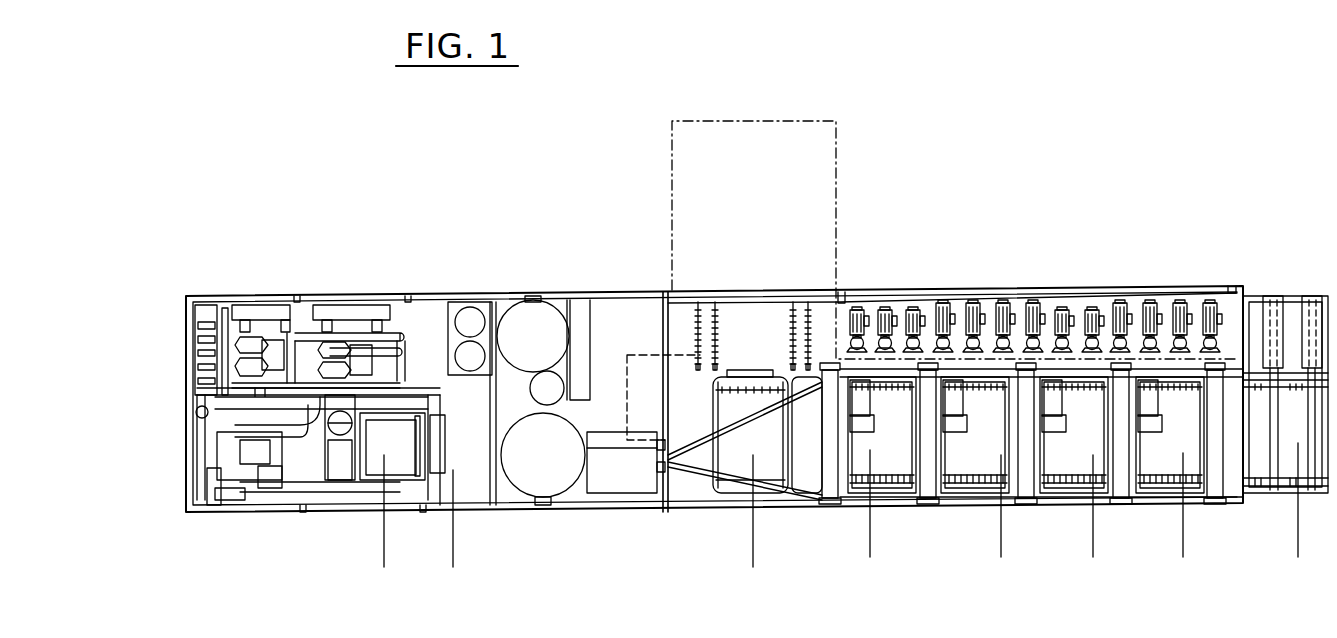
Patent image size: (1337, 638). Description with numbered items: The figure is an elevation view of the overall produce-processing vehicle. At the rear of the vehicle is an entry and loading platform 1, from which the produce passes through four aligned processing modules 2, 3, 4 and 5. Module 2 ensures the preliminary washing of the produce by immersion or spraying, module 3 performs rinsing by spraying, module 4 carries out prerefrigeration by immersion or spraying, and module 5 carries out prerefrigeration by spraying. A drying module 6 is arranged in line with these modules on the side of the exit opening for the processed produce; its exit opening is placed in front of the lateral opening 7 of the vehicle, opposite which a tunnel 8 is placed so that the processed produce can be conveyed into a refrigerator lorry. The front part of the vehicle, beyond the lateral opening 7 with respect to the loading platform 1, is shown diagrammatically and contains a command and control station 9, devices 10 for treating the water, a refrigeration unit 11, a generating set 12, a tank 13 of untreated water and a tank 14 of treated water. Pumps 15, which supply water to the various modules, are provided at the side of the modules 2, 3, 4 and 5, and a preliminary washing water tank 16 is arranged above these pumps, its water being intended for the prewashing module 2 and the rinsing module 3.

The entry and loading platform 1 is at (1283, 505).
The module 2 is at (1162, 505).
The module 3 is at (1058, 505).
The module 4 is at (967, 505).
The module 5 is at (855, 505).
The drying module 6 is at (720, 510).
The lateral opening 7 is at (790, 296).
The tunnel 8 is at (808, 147).
The command and control station 9 is at (622, 326).
The devices for treating the water 10 is at (527, 322).
The refrigeration unit 11 is at (338, 312).
The generating set 12 is at (372, 510).
The tank of untreated water 13 is at (480, 510).
The tank of treated water 14 is at (204, 336).
The pumps 15 is at (1037, 299).
The preliminary washing water tank 16 is at (1079, 315).